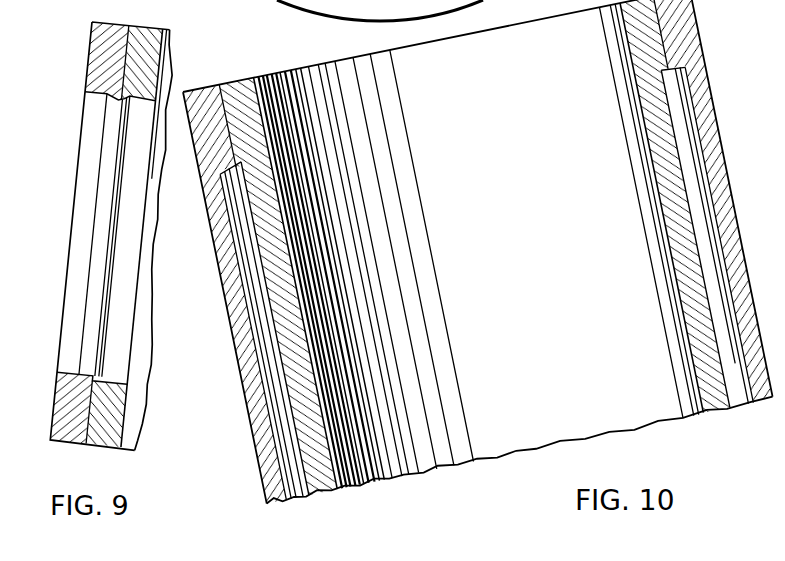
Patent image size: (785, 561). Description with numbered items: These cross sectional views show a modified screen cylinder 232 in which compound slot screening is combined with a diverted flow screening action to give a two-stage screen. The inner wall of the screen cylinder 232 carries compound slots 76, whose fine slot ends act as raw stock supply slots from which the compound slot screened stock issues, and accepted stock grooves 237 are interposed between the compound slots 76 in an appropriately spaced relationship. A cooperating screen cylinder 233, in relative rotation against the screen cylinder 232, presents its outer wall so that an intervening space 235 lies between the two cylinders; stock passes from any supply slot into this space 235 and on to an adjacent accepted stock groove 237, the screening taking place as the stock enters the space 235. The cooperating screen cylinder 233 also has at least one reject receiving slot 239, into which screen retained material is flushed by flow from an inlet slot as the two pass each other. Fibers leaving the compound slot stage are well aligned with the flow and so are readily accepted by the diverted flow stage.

In FIG. 9, the compound slot 76 is at (70, 213).
In FIG. 9, the screen cylinder 232 is at (90, 40).
In FIG. 10, the screen cylinder 232 is at (695, 12).
In FIG. 9, the cooperating screen cylinder 233 is at (165, 50).
In FIG. 10, the cooperating screen cylinder 233 is at (618, 38).
In FIG. 9, the intervening space 235 is at (118, 157).
In FIG. 10, the intervening space 235 is at (280, 360).
In FIG. 10, the accepted stock groove 237 is at (268, 318).
In FIG. 9, the reject receiving slot 239 is at (118, 312).
In FIG. 10, the reject receiving slot 239 is at (295, 235).